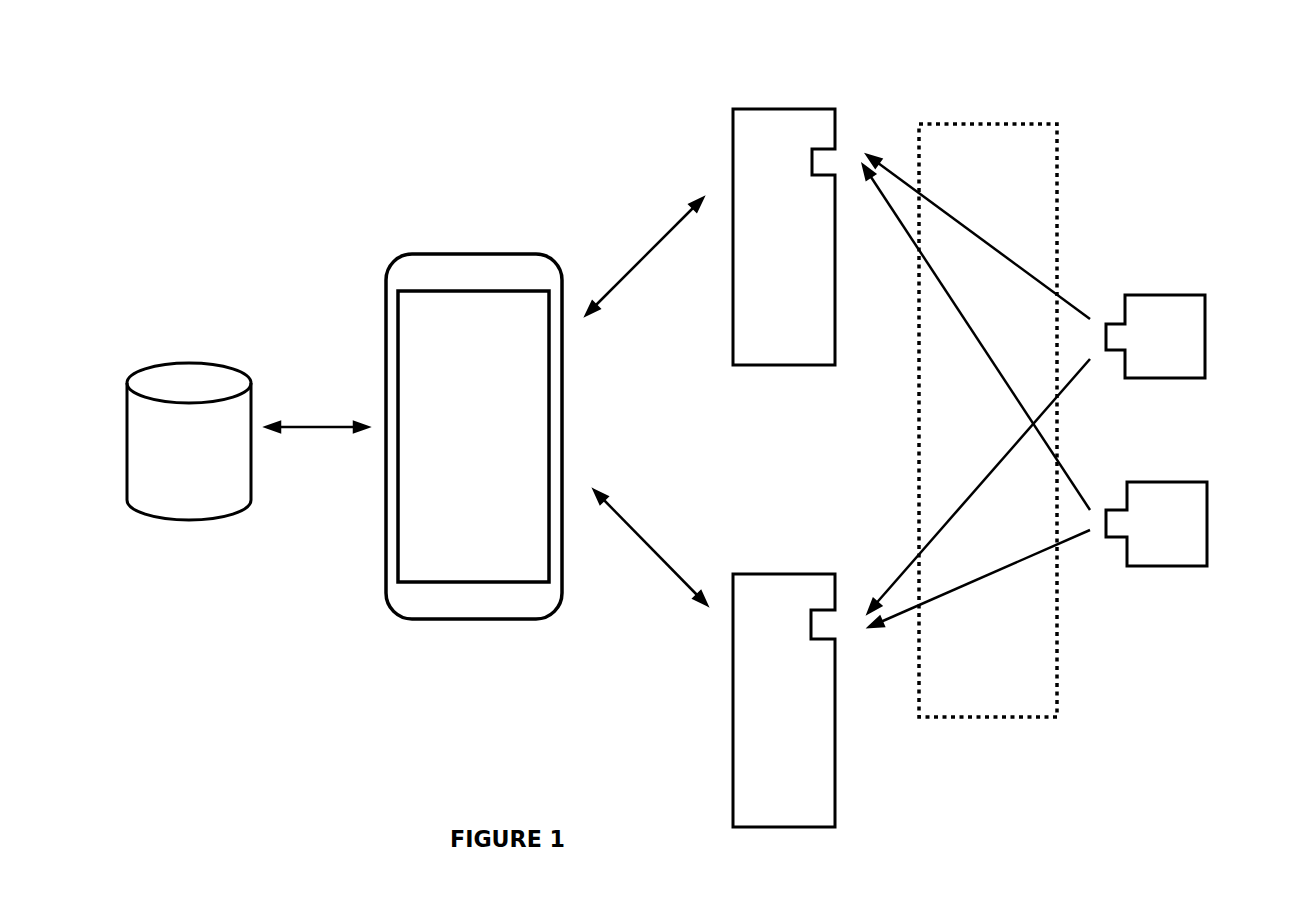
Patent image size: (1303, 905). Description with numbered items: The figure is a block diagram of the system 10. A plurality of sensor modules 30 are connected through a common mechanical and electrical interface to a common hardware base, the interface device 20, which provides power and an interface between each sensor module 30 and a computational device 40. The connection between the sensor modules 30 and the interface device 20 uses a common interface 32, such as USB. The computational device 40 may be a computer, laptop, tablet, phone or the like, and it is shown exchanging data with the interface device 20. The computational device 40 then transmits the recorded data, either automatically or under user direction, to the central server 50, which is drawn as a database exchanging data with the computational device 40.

The system 10 is at (357, 143).
The interface device 20 is at (818, 381).
The sensor module 30 is at (1224, 377).
The common interface 32 is at (950, 102).
The computational device 40 is at (450, 638).
The central server 50 is at (177, 533).